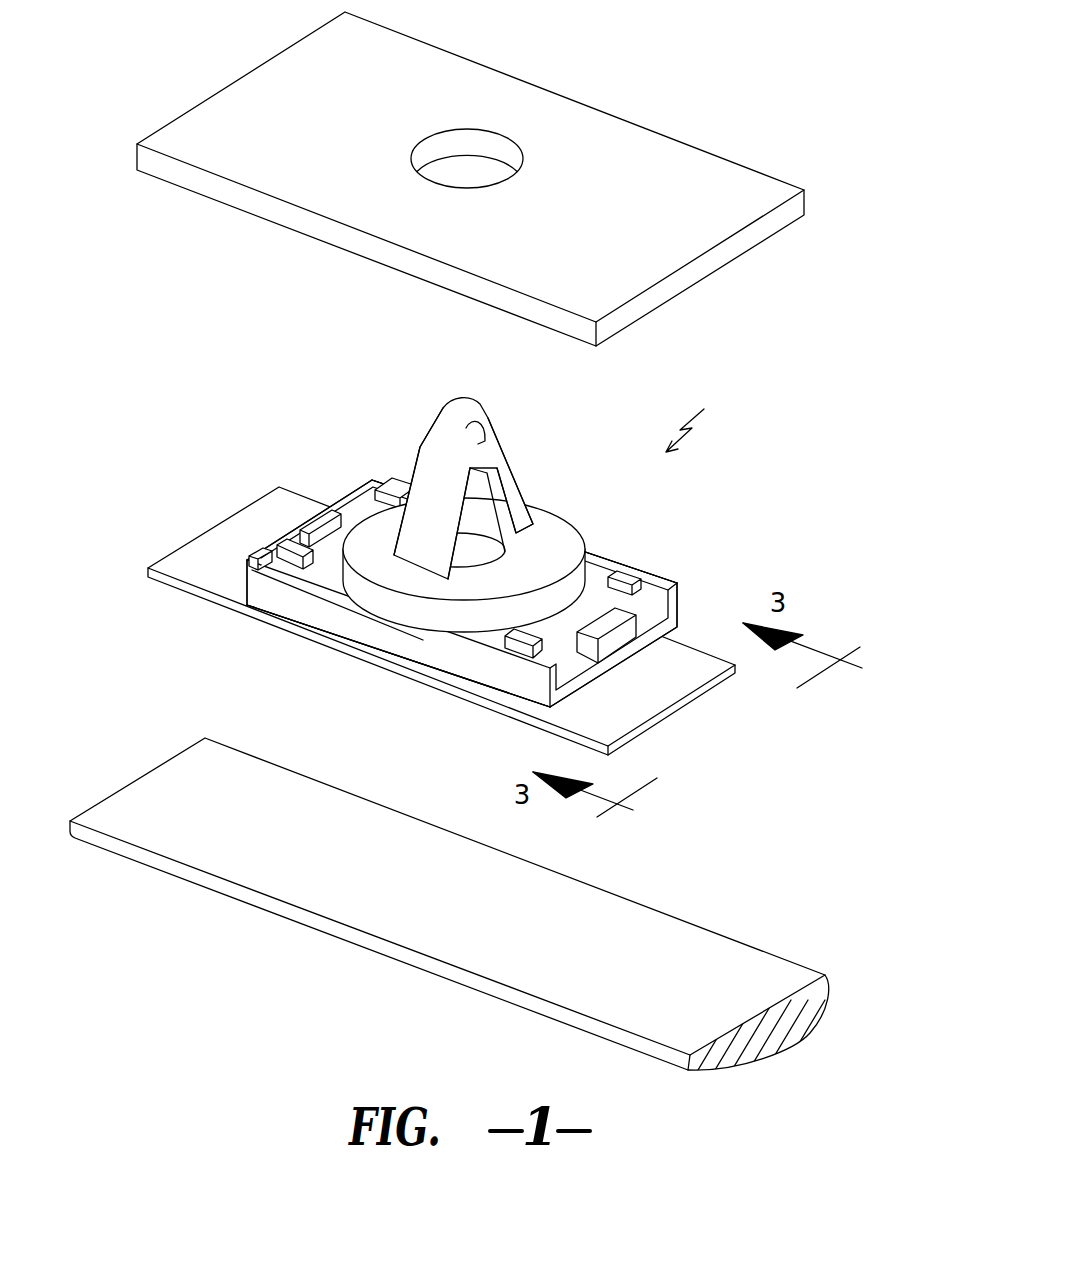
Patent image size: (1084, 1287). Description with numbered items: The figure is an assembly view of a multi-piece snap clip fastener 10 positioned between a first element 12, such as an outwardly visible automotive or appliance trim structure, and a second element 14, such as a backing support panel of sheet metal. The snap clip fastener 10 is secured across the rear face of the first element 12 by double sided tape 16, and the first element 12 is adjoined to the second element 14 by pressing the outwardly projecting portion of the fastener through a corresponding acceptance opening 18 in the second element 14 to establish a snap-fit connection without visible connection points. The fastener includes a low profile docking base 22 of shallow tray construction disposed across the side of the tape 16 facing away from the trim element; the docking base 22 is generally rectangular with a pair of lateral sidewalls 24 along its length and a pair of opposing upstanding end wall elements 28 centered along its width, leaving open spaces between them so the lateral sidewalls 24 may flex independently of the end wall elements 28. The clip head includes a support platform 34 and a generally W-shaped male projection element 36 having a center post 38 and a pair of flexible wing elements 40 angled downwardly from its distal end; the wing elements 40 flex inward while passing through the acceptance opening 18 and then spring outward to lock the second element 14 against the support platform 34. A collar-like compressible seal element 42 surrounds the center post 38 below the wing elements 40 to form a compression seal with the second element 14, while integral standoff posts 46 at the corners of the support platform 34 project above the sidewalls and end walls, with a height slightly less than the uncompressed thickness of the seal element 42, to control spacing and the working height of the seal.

The snap clip fastener 10 is at (703, 417).
The first element 12 is at (664, 935).
The second element 14 is at (624, 162).
The double sided tape 16 is at (657, 697).
The acceptance opening 18 is at (486, 144).
The docking base 22 is at (663, 567).
The lateral sidewalls 24 is at (587, 552).
The end wall elements 28 is at (313, 515).
The support platform 34 is at (490, 632).
The male projection element 36 is at (438, 412).
The center post 38 is at (440, 550).
The wing elements 40 is at (430, 475).
The seal element 42 is at (543, 497).
The standoff posts 46 is at (633, 567).